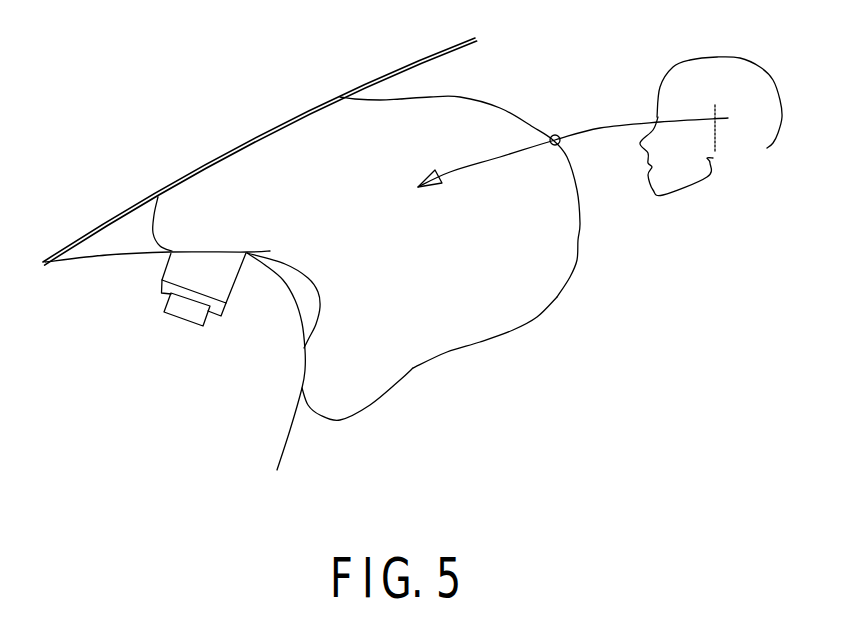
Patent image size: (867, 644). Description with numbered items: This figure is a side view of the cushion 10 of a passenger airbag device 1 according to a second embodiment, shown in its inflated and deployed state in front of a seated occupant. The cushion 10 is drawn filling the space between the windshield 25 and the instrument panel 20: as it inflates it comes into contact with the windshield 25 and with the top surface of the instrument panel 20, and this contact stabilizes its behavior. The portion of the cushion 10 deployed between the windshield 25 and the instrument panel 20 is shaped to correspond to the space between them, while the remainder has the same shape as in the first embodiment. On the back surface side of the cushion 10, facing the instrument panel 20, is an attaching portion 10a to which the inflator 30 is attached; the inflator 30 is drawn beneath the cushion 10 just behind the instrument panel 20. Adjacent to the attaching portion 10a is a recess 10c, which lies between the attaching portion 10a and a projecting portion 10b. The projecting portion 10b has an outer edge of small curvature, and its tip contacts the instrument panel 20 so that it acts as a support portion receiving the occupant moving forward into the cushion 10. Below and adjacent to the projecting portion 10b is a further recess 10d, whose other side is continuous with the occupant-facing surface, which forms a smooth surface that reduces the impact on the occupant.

The passenger airbag device 1 is at (381, 239).
The cushion 10 is at (573, 270).
The attaching portion 10a is at (216, 248).
The projecting portion 10b is at (335, 416).
The recess 10c is at (319, 288).
The recess 10d is at (446, 353).
The instrument panel 20 is at (289, 414).
The windshield 25 is at (397, 70).
The inflator 30 is at (171, 312).